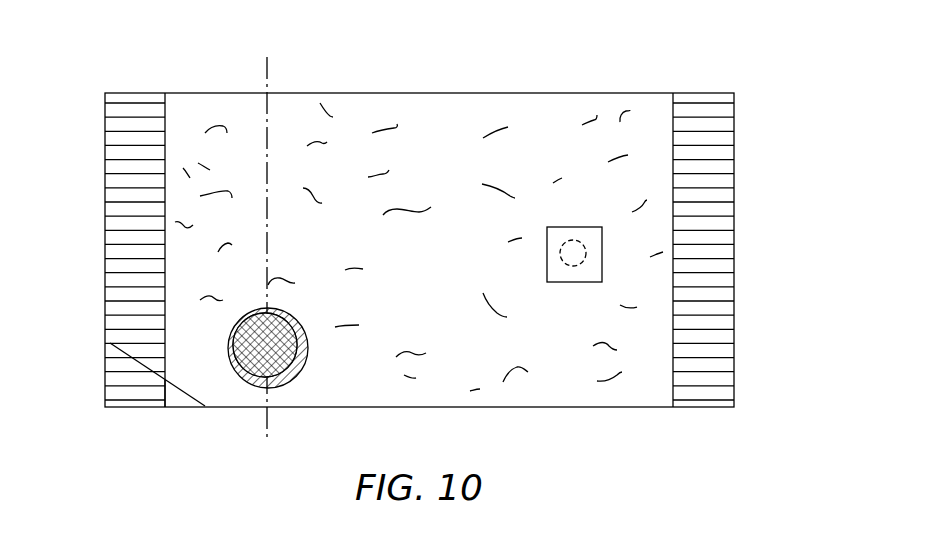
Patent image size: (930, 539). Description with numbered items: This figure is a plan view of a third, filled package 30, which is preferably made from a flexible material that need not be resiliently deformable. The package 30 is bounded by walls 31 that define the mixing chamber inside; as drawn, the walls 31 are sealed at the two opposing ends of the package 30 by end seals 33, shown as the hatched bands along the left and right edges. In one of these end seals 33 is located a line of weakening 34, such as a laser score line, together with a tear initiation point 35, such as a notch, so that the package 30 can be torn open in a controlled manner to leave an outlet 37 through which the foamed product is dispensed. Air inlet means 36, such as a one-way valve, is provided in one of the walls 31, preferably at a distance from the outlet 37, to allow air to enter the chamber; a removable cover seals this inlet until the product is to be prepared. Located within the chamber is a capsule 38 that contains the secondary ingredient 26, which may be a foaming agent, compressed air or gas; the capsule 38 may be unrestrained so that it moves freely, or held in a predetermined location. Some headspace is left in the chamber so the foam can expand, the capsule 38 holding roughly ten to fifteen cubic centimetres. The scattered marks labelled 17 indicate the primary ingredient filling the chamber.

The package 30 is at (419, 208).
The walls 31 is at (530, 93).
The end seals 33 is at (105, 127).
The tear initiation point 35 is at (110, 343).
The line of weakening 34 is at (188, 395).
The capsule 38 is at (288, 382).
The secondary ingredient 26 is at (308, 348).
The air inlet means 36 is at (570, 283).
The outlet 37 is at (568, 240).
The fibers 17 is at (353, 225).